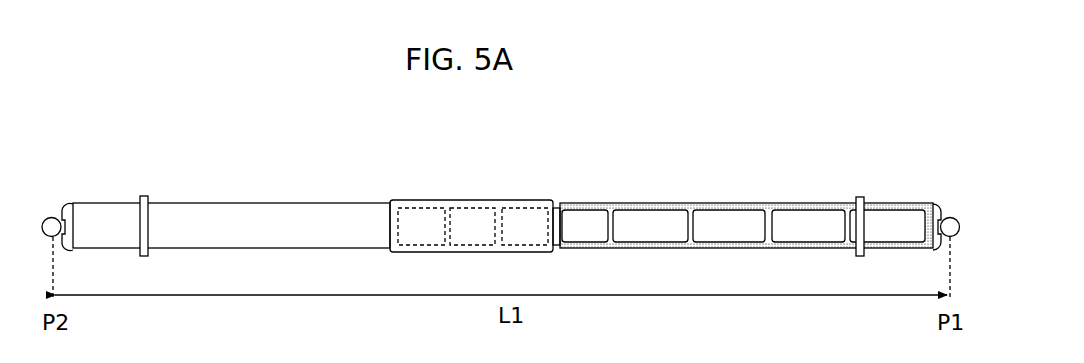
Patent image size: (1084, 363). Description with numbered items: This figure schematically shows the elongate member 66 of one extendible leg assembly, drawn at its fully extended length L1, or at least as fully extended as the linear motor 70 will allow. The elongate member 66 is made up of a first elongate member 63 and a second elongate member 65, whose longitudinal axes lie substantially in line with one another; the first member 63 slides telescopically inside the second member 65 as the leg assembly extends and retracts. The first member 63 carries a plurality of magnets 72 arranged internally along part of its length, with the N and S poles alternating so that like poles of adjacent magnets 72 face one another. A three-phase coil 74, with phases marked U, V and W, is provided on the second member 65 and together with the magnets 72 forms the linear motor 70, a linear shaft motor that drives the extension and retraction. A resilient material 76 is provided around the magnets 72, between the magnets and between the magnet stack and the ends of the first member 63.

The elongate member 66 is at (105, 136).
The second elongate member 65 is at (250, 203).
The coil 74 is at (498, 199).
The linear motor 70 is at (743, 134).
The magnets 72 is at (647, 203).
The first elongate member 63 is at (805, 203).
The resilient material 76 is at (893, 203).